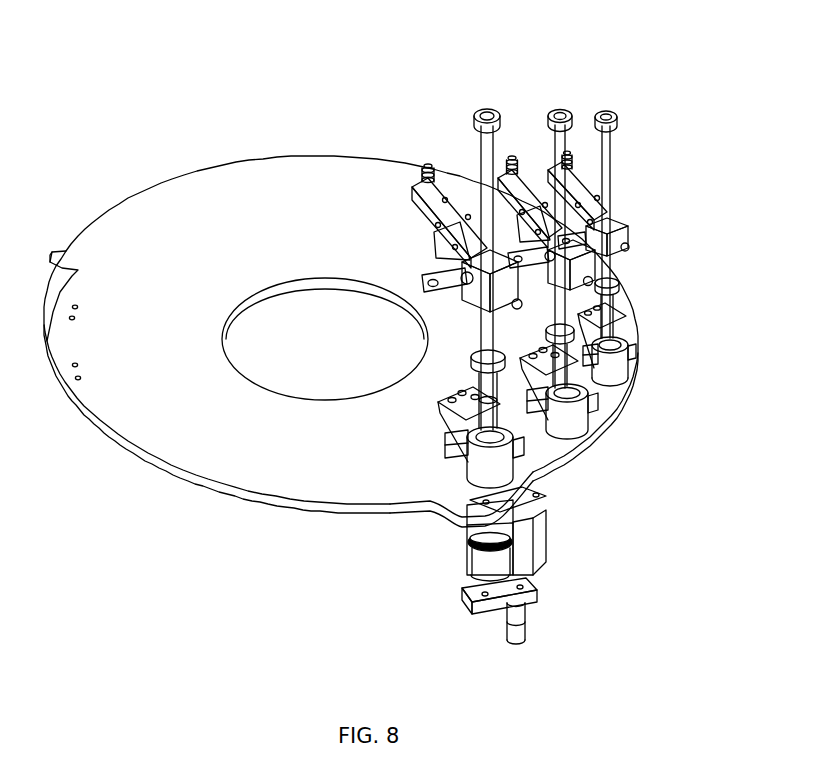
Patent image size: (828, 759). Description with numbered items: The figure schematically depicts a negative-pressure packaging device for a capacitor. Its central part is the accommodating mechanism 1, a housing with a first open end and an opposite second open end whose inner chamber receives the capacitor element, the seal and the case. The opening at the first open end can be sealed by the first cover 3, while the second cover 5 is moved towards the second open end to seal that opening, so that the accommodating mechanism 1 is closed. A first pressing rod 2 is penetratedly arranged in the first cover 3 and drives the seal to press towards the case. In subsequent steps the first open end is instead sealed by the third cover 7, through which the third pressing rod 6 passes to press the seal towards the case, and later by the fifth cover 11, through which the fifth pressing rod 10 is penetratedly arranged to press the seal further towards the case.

The accommodating mechanism 1 is at (630, 345).
The first pressing rod 2 is at (495, 328).
The first cover 3 is at (482, 368).
The second cover 5 is at (480, 543).
The third pressing rod 6 is at (562, 136).
The third cover 7 is at (605, 380).
The fifth pressing rod 10 is at (608, 146).
The fifth cover 11 is at (622, 282).